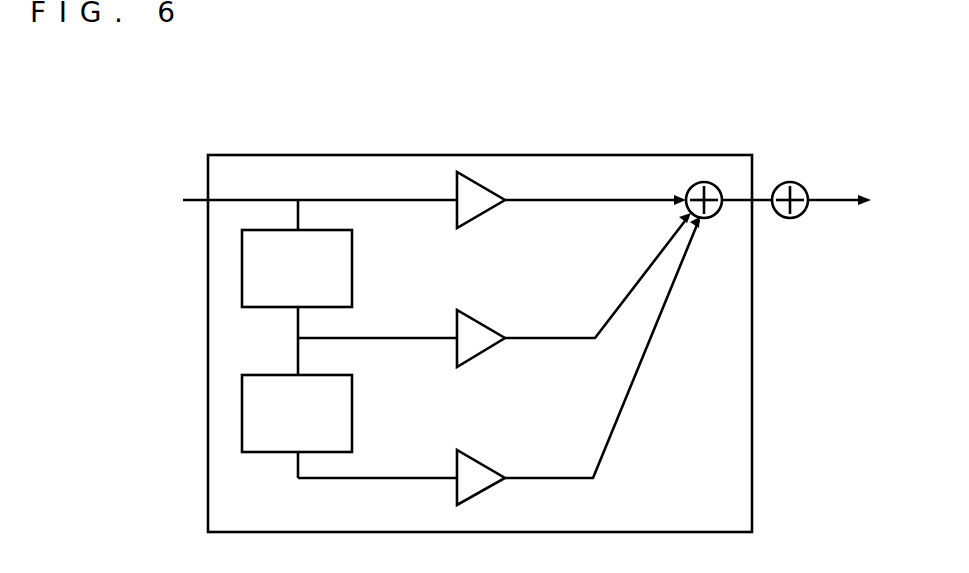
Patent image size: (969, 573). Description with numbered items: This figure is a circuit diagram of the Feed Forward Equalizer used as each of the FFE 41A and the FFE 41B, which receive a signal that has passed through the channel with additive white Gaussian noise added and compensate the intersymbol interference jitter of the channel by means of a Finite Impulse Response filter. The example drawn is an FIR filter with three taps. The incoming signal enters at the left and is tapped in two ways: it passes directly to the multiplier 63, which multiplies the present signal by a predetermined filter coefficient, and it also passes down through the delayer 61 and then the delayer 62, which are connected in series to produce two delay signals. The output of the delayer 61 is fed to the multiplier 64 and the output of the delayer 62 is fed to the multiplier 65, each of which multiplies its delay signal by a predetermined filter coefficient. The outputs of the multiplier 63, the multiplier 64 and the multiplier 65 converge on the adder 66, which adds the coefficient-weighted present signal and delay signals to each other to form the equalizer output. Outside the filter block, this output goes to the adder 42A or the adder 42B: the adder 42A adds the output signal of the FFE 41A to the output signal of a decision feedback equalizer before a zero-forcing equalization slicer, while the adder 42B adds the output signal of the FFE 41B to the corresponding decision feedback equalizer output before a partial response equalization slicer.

The FFE 41A is at (480, 316).
The FFE 41B is at (560, 155).
The adder 42A is at (831, 244).
The adder 42B is at (793, 218).
The delayer 61 is at (352, 273).
The delayer 62 is at (352, 405).
The multiplier 63 is at (487, 213).
The multiplier 64 is at (490, 348).
The multiplier 65 is at (490, 488).
The adder 66 is at (718, 215).